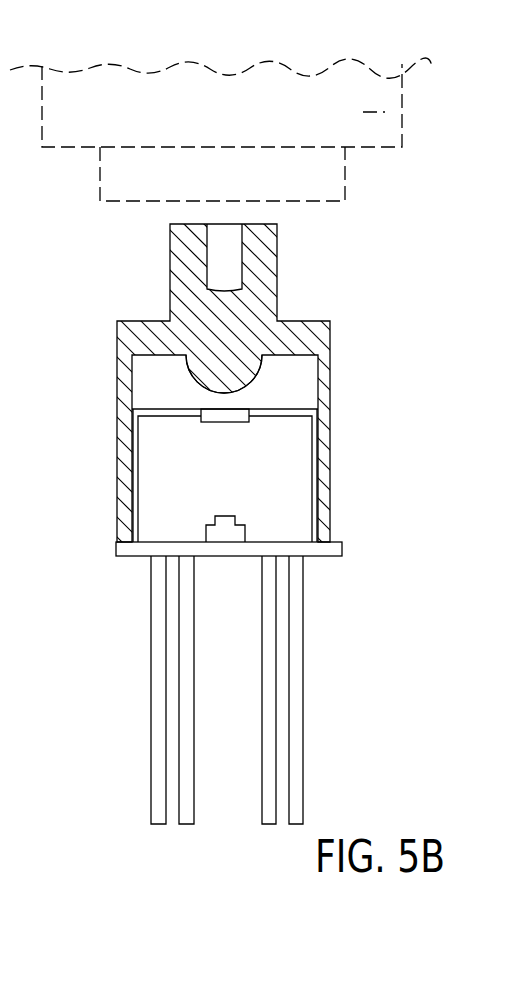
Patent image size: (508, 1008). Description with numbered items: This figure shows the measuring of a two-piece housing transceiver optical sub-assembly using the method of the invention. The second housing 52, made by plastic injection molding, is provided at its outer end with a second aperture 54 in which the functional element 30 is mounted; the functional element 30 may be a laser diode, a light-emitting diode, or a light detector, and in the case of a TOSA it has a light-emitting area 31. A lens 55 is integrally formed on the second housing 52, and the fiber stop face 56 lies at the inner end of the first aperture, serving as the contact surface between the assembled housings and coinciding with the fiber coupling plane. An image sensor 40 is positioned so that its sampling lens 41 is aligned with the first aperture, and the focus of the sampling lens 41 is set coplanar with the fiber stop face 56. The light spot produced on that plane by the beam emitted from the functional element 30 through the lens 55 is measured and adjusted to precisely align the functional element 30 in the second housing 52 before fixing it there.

The functional element 30 is at (320, 699).
The light-emitting area 31 is at (225, 516).
The image sensor 40 is at (395, 108).
The sampling lens 41 is at (283, 160).
The second housing 52 is at (346, 359).
The second aperture 54 is at (305, 370).
The lens 55 is at (250, 383).
The fiber stop face 56 is at (258, 224).